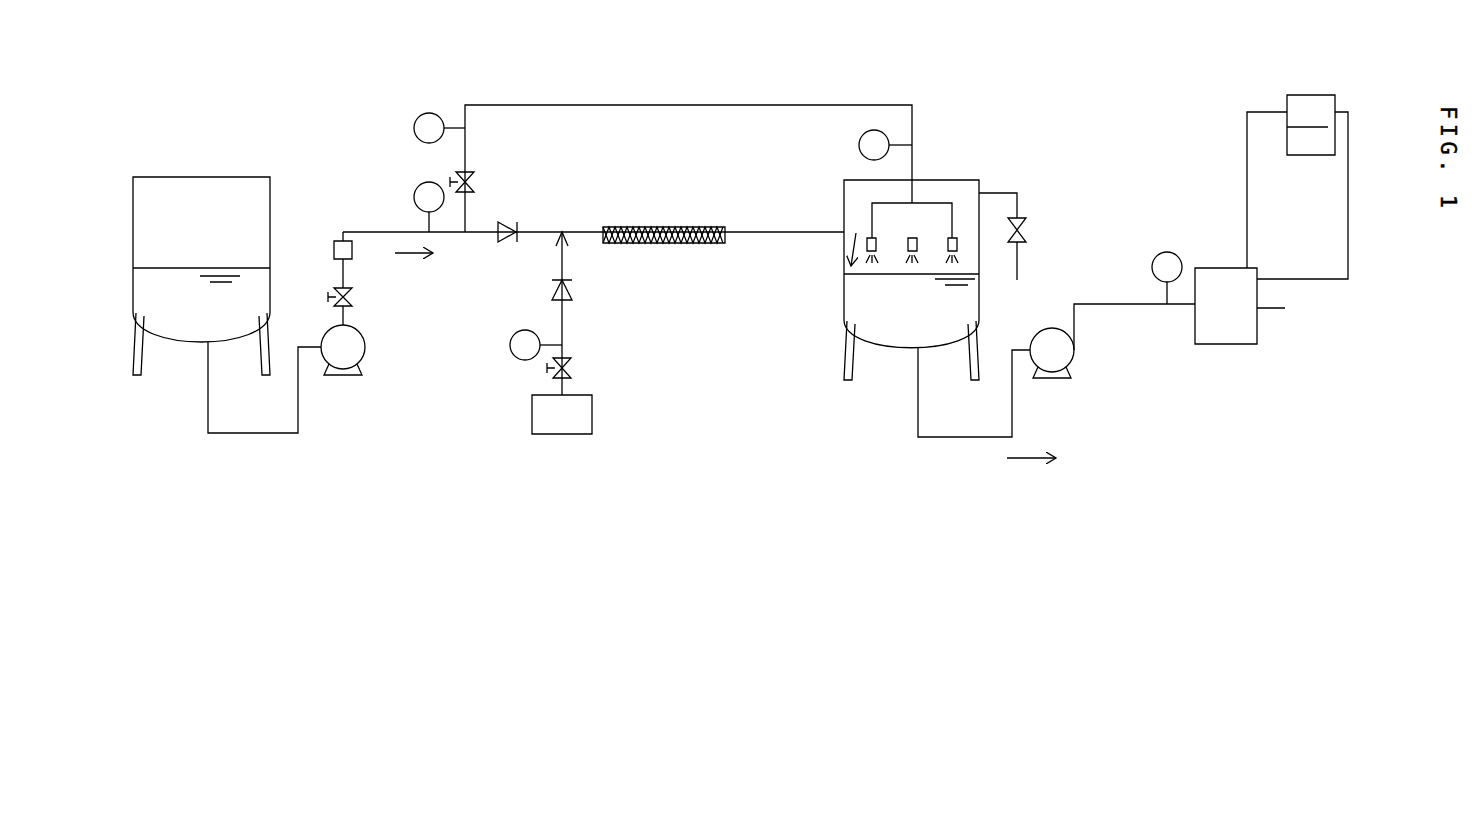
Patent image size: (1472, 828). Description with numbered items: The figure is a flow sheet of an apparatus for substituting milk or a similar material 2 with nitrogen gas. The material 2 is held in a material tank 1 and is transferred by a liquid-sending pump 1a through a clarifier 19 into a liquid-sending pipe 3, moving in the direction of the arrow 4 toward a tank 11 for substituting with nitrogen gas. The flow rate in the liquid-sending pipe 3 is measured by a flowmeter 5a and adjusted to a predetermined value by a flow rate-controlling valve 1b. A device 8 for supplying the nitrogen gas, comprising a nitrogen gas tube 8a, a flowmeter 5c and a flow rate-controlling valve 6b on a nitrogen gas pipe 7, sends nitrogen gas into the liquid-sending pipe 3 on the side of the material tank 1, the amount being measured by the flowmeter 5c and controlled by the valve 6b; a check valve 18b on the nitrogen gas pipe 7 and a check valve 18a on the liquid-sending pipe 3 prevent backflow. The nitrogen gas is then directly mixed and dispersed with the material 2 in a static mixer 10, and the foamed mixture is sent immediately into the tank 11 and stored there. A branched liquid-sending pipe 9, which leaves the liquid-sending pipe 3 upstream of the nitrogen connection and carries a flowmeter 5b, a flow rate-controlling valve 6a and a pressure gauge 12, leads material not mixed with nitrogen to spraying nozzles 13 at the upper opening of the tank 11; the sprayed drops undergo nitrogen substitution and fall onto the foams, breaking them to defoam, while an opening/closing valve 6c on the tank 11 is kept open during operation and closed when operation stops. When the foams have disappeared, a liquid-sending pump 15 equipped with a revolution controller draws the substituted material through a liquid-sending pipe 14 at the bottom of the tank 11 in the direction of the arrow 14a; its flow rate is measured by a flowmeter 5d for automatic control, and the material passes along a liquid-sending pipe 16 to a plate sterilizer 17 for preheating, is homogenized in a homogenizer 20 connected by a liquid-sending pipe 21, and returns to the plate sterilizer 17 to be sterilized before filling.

The material tank 1 is at (201, 225).
The liquid-sending pump 1a is at (281, 416).
The flow rate-controlling valve 1b is at (372, 342).
The material 2 is at (229, 208).
The liquid-sending pipe 3 is at (593, 183).
The arrow 4 is at (414, 298).
The flowmeter 5a is at (395, 145).
The flowmeter 5b is at (439, 80).
The flowmeter 5c is at (502, 385).
The flowmeter 5d is at (1191, 225).
The flow rate-controlling valve 6a is at (498, 153).
The flow rate-controlling valve 6b is at (621, 369).
The opening/closing valve 6c is at (1033, 213).
The nitrogen gas pipe 7 is at (599, 313).
The device for supplying the nitrogen gas 8 is at (577, 474).
The nitrogen gas tube 8a is at (605, 418).
The branched liquid-sending pipe 9 is at (688, 125).
The static mixer 10 is at (664, 200).
The tank for substituting with nitrogen gas 11 is at (859, 280).
The pressure gauge 12 is at (885, 81).
The spraying nozzle 13 is at (990, 165).
The liquid-sending pipe 14 is at (959, 432).
The arrow 14a is at (1025, 490).
The liquid-sending pump equipped with a revolution controller 15 is at (1086, 364).
The liquid-sending pipe 16 is at (1134, 221).
The plate sterilizer 17 is at (1230, 375).
The check valve 18a is at (553, 195).
The check valve 18b is at (615, 291).
The clarifier 19 is at (365, 273).
The homogenizer 20 is at (1311, 79).
The liquid-sending pipe 21 is at (1318, 149).